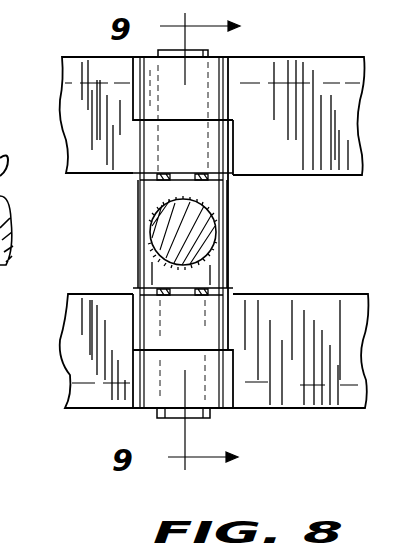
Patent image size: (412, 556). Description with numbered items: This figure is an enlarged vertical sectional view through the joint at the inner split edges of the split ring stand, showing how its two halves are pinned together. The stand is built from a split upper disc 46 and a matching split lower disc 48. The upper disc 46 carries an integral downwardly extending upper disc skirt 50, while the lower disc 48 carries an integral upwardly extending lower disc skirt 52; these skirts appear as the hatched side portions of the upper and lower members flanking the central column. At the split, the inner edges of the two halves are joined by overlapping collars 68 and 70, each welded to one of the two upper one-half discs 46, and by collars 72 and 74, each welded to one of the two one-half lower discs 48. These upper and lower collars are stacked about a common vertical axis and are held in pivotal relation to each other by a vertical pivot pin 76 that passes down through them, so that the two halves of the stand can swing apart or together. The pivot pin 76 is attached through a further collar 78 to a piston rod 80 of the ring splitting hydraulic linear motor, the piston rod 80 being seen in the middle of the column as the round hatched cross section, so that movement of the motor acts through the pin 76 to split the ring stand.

The split upper disc 46 is at (103, 65).
The split lower disc 48 is at (65, 398).
The upper disc skirt 50 is at (80, 103).
The lower disc skirt 52 is at (117, 308).
The overlapping collar 68 is at (207, 81).
The overlapping collar 70 is at (157, 150).
The collar 72 is at (234, 290).
The collar 74 is at (148, 398).
The vertical pivot pin 76 is at (205, 424).
The collar 78 is at (229, 253).
The piston rod 80 is at (190, 220).